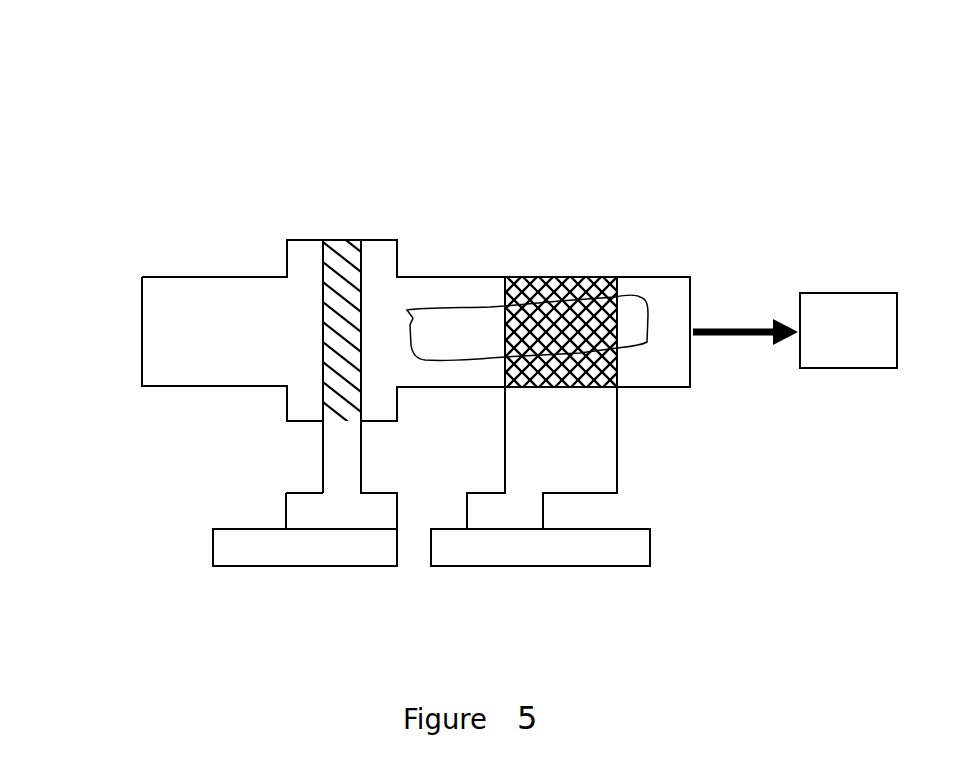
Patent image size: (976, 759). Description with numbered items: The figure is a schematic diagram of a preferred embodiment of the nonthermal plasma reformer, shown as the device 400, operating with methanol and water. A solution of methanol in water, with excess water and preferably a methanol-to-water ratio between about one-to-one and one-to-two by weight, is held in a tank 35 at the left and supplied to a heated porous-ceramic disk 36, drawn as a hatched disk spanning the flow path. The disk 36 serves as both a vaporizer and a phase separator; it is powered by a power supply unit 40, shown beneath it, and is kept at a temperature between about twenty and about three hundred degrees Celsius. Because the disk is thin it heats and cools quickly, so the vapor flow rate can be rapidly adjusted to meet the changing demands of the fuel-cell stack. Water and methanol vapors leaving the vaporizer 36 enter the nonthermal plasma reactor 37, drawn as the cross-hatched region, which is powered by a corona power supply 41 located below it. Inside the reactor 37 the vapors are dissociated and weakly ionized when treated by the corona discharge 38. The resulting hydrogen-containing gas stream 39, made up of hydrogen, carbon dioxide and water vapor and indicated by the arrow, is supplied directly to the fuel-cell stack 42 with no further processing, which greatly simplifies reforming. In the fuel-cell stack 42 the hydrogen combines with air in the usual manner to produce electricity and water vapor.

The tank 35 is at (180, 350).
The heated porous-ceramic disk 36 is at (337, 255).
The nonthermal plasma reactor 37 is at (542, 280).
The corona discharge 38 is at (622, 333).
The H2-containing gas stream 39 is at (745, 294).
The power supply unit 40 is at (318, 549).
The corona power supply 41 is at (495, 550).
The fuel-cell stack 42 is at (826, 335).
The device 400 is at (562, 212).